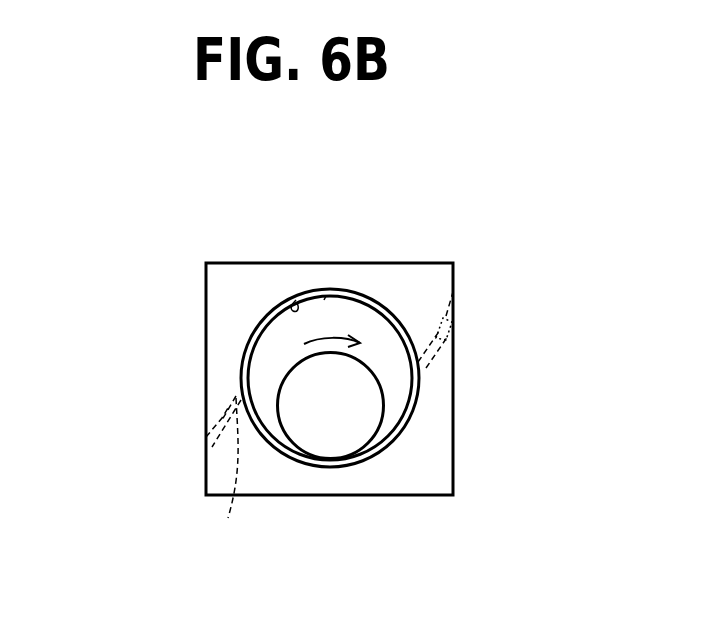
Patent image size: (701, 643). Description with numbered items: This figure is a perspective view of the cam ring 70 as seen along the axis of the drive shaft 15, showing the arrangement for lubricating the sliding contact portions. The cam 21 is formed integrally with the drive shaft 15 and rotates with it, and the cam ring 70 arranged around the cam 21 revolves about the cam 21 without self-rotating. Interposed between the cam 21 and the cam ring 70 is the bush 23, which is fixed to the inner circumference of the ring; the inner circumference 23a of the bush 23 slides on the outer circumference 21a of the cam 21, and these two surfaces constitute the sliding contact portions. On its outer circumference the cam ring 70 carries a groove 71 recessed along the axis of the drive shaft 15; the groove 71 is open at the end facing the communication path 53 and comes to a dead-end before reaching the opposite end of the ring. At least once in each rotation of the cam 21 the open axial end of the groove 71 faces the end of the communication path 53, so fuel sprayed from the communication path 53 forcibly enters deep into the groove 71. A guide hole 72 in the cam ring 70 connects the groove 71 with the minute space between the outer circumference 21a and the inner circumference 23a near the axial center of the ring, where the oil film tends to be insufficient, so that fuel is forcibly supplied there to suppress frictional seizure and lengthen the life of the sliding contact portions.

The cam ring 70 is at (206, 312).
The cam 21 is at (273, 354).
The bush 23 is at (242, 377).
The inner circumference of the bush 23a is at (295, 305).
The outer circumference of the cam 21a is at (328, 297).
The drive shaft 15 is at (348, 408).
The communication path 53 is at (452, 322).
The groove 71 is at (453, 292).
The guide hole 72 is at (438, 345).